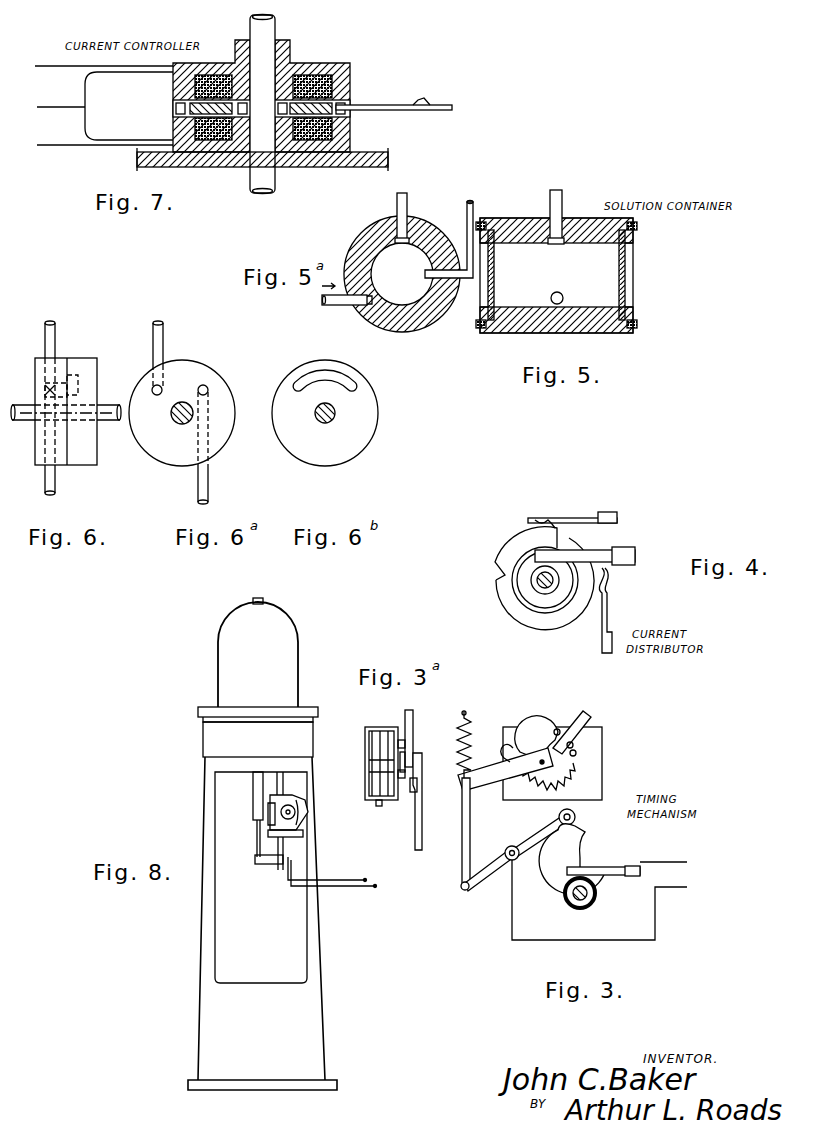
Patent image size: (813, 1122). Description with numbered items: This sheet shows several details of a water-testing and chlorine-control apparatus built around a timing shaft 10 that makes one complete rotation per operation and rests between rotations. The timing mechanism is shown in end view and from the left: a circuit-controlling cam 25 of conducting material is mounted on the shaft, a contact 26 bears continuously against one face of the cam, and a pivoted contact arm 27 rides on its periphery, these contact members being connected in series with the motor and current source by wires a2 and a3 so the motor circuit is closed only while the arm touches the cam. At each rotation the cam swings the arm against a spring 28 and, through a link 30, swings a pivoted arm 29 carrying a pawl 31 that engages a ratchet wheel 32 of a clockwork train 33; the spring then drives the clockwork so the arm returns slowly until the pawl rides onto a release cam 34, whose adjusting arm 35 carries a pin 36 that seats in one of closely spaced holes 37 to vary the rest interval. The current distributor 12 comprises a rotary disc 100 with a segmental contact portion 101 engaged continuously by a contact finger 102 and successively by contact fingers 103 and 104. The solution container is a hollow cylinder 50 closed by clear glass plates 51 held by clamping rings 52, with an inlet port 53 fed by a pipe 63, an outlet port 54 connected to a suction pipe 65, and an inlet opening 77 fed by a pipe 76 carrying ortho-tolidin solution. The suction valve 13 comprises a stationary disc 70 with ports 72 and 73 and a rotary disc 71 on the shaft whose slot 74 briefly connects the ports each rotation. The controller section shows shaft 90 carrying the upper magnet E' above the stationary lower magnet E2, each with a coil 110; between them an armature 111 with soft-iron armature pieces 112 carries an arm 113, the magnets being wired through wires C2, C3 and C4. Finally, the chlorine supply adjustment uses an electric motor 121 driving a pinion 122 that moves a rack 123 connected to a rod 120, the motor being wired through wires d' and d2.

In FIG. 7, the shaft 90 is at (250, 29).
In FIG. 7, the coil 110 is at (315, 65).
In FIG. 7, the armature 111 is at (176, 103).
In FIG. 7, the armature pieces 112 is at (352, 92).
In FIG. 7, the arm 113 is at (405, 105).
In FIG. 7, the upper electro-magnet E' is at (351, 56).
In FIG. 7, the lower electro-magnet E2 is at (338, 160).
In FIG. 7, the wire C2 is at (104, 103).
In FIG. 7, the wire C3 is at (105, 155).
In FIG. 7, the wire C4 is at (61, 116).
In FIG. 5A, the hollow cylinder 50 is at (365, 246).
In FIG. 5, the hollow cylinder 50 is at (522, 228).
In FIG. 5, the plates 51 is at (626, 272).
In FIG. 5, the clamping rings 52 is at (632, 320).
In FIG. 5A, the inlet port 53 is at (372, 302).
In FIG. 5, the inlet port 53 is at (562, 296).
In FIG. 5A, the outlet port 54 is at (410, 245).
In FIG. 5, the outlet port 54 is at (562, 240).
In FIG. 5A, the pipe 63 is at (344, 304).
In FIG. 5A, the pipe 65 is at (412, 225).
In FIG. 5, the pipe 65 is at (562, 215).
In FIG. 6, the pipe 65 is at (46, 482).
In FIG. 6A, the pipe 65 is at (208, 483).
In FIG. 5A, the pipe 76 is at (475, 200).
In FIG. 5A, the inlet opening 77 is at (418, 328).
In FIG. 6, the timing shaft 10 is at (104, 404).
In FIG. 6A, the timing shaft 10 is at (186, 403).
In FIG. 6B, the timing shaft 10 is at (315, 413).
In FIG. 4, the timing shaft 10 is at (532, 580).
In FIG. 3, the timing shaft 10 is at (590, 893).
In FIG. 6, the valve 13 is at (68, 358).
In FIG. 6A, the valve 13 is at (184, 365).
In FIG. 6, the stationary disc 70 is at (38, 452).
In FIG. 6A, the stationary disc 70 is at (162, 455).
In FIG. 6, the rotary disc 71 is at (82, 458).
In FIG. 6B, the rotary disc 71 is at (331, 460).
In FIG. 6A, the port 72 is at (210, 388).
In FIG. 6A, the port 73 is at (153, 386).
In FIG. 6B, the slot 74 is at (345, 385).
In FIG. 4, the distributor 12 is at (493, 609).
In FIG. 4, the rotary disc 100 is at (533, 605).
In FIG. 4, the segmental contact portion 101 is at (525, 525).
In FIG. 4, the contact finger 102 is at (603, 554).
In FIG. 4, the contact finger 103 is at (577, 512).
In FIG. 4, the contact finger 104 is at (608, 607).
In FIG. 3A, the clockwork train 33 is at (384, 727).
In FIG. 3, the clockwork train 33 is at (516, 730).
In FIG. 3A, the adjusting arm 35 is at (413, 722).
In FIG. 3, the adjusting arm 35 is at (582, 718).
In FIG. 3A, the link 30 is at (423, 838).
In FIG. 3, the spring 28 is at (457, 736).
In FIG. 3, the pawl 31 is at (508, 755).
In FIG. 3, the release cam 34 is at (541, 732).
In FIG. 3, the ratchet wheel 32 is at (551, 776).
In FIG. 3, the pin 36 is at (574, 745).
In FIG. 3, the holes 37 is at (577, 753).
In FIG. 3, the pivoted arm 29 is at (470, 786).
In FIG. 3, the contact arm 27 is at (493, 880).
In FIG. 3, the circuit-controlling cam 25 is at (548, 884).
In FIG. 3, the contact 26 is at (612, 867).
In FIG. 3, the wire a2 is at (663, 853).
In FIG. 3, the wire a3 is at (599, 900).
In FIG. 8, the rod 120 is at (256, 842).
In FIG. 8, the electric motor 121 is at (300, 798).
In FIG. 8, the pinion 122 is at (296, 812).
In FIG. 8, the rack 123 is at (284, 848).
In FIG. 8, the wire d' is at (331, 868).
In FIG. 8, the wire d2 is at (358, 889).